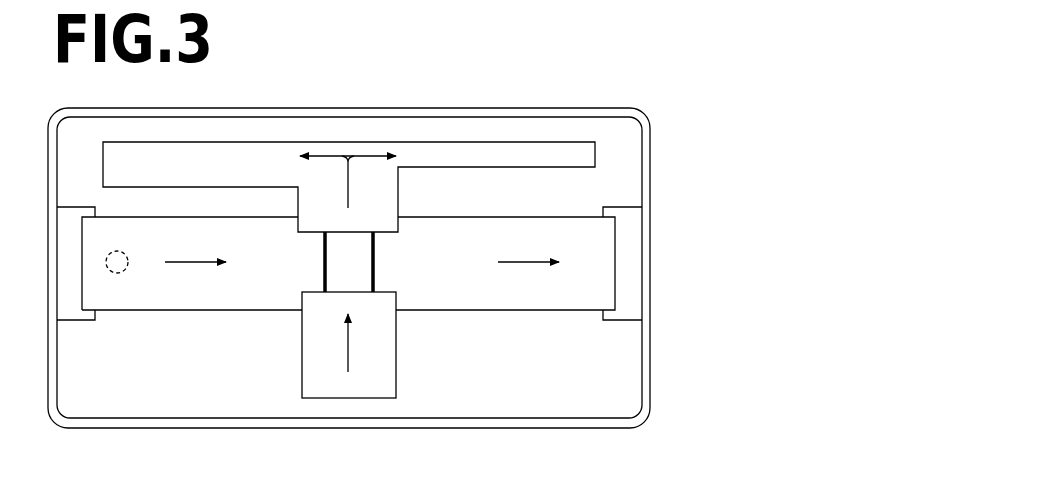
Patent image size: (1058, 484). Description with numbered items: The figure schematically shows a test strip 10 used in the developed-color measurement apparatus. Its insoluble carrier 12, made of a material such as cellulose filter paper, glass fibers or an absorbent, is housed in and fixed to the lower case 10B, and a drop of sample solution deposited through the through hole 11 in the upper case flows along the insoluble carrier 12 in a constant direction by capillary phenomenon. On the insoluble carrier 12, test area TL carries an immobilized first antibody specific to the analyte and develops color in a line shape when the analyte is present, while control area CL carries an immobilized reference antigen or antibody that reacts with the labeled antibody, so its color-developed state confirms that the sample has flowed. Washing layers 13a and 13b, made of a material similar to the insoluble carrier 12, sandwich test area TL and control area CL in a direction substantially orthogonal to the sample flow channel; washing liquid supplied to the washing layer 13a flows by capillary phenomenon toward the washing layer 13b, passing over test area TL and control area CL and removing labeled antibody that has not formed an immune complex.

The test strip 10 is at (644, 83).
The lower case 10B is at (652, 175).
The through hole 11 is at (121, 273).
The insoluble carrier 12 is at (202, 312).
The washing layer 13a is at (385, 348).
The washing layer 13b is at (452, 157).
The test area TL is at (320, 255).
The control area CL is at (378, 249).